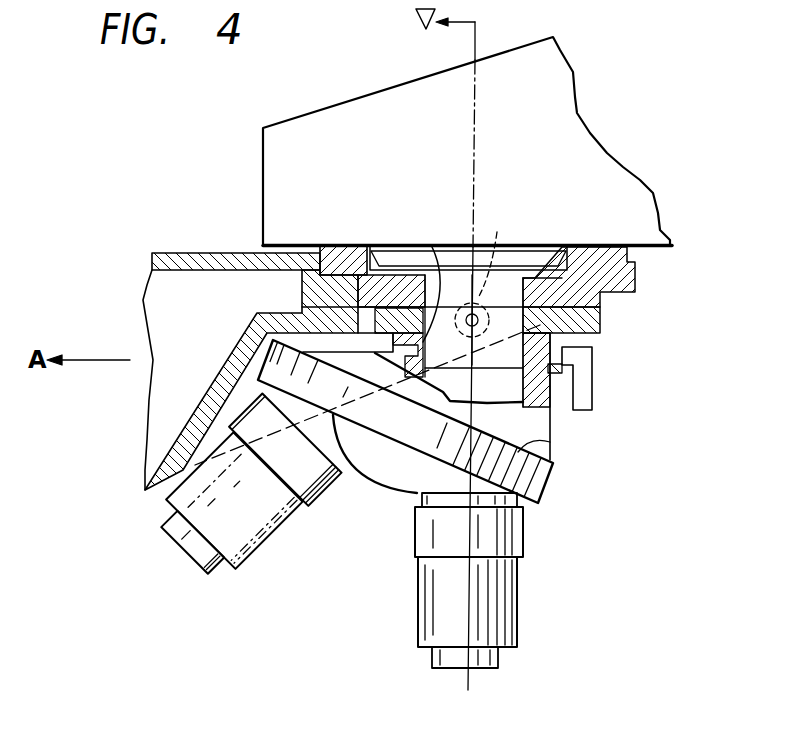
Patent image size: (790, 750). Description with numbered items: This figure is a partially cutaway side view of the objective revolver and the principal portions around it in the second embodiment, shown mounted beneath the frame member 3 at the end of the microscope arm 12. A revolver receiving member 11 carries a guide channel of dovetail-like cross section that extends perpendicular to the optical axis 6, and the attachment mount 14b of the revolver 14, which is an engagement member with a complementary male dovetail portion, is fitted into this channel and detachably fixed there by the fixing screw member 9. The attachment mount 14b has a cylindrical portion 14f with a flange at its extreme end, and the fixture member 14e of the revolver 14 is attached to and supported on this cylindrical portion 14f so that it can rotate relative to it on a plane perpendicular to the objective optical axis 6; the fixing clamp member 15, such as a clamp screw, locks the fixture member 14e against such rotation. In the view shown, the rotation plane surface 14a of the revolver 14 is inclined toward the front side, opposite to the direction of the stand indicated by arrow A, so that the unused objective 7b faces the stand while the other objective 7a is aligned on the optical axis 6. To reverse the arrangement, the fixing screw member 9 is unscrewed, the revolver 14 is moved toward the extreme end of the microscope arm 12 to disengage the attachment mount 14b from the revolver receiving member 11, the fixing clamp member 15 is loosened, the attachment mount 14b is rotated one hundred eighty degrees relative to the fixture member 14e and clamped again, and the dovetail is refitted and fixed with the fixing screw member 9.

The machine frame block 3 is at (607, 175).
The microscope arm 12 is at (203, 262).
The fixture member 14e is at (533, 418).
The cylindrical portion 14f is at (432, 247).
The revolver 14 is at (563, 483).
The fixing screw member 9 is at (492, 240).
The revolver receiving member 11 is at (636, 264).
The attachment mount 14b is at (597, 327).
The fixing clamp member 15 is at (590, 356).
The rotation plane surface 14a is at (540, 440).
The unused objective 7b is at (253, 533).
The vertical connection tube 7a is at (505, 613).
The optical axis 6 is at (468, 677).